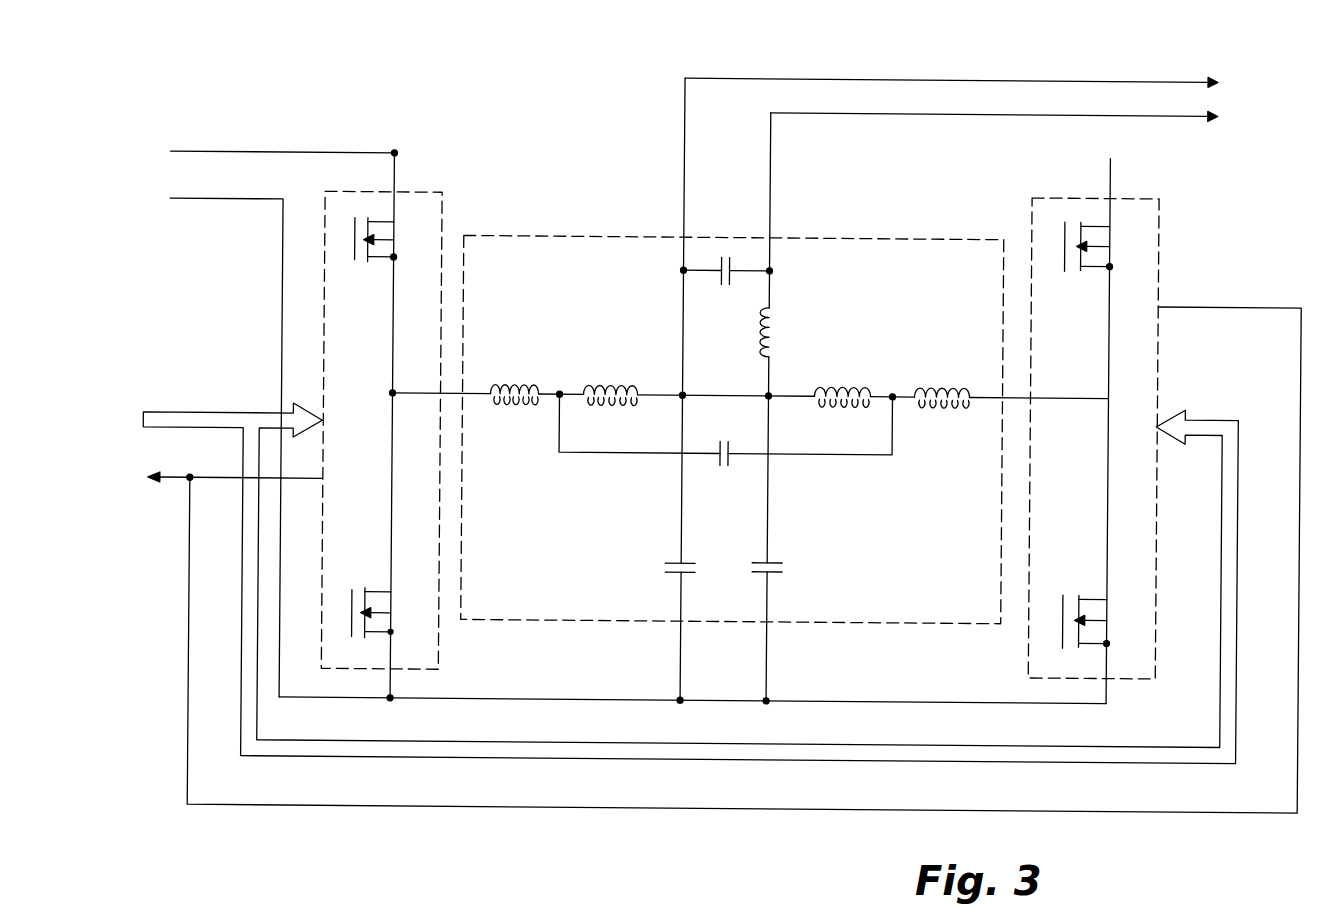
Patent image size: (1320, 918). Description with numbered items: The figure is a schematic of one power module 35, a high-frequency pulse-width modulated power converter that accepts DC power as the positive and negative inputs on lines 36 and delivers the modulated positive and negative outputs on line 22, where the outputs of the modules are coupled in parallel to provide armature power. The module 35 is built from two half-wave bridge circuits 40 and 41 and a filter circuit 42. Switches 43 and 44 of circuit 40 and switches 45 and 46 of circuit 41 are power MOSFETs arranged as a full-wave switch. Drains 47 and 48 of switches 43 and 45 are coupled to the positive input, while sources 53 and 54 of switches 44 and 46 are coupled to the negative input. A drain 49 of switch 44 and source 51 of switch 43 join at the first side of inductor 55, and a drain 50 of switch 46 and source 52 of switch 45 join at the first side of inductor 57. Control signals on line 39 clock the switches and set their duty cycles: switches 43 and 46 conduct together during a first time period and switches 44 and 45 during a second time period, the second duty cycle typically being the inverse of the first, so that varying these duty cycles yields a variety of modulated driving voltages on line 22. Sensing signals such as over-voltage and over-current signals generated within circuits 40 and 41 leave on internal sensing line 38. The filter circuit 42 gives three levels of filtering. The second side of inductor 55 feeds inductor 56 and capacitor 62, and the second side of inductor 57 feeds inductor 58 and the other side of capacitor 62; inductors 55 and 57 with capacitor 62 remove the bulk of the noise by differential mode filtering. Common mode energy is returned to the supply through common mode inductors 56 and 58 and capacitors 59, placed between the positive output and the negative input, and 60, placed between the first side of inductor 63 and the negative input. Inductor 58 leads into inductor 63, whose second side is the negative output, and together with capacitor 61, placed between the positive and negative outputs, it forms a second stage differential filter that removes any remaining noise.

The armature power line 22 is at (1148, 78).
The power module 35 is at (695, 382).
The input lines 36 is at (210, 156).
The internal sensing line 38 is at (182, 484).
The control signal line 39 is at (150, 414).
The half-wave bridge circuit 40 is at (440, 212).
The half-wave bridge circuit 41 is at (1157, 214).
The filter circuit 42 is at (940, 237).
The switch S1 43 is at (394, 227).
The switch S2 44 is at (395, 597).
The switch S3 45 is at (1128, 219).
The switch S4 46 is at (1108, 616).
The drain of switch 43 47 is at (367, 224).
The drain of switch 45 48 is at (1082, 223).
The drain of switch 44 49 is at (372, 594).
The drain of switch 46 50 is at (1086, 596).
The source of switch 43 51 is at (394, 259).
The source of switch 45 52 is at (1110, 262).
The source of switch 44 53 is at (394, 631).
The source of switch 46 54 is at (1110, 636).
The inductor L1 55 is at (516, 402).
The inductor L3 56 is at (612, 402).
The inductor L2 57 is at (948, 402).
The inductor L4 58 is at (845, 402).
The capacitor C2 59 is at (674, 560).
The capacitor C3 60 is at (774, 560).
The capacitor C4 61 is at (716, 280).
The capacitor C1 62 is at (720, 460).
The inductor L5 63 is at (772, 318).